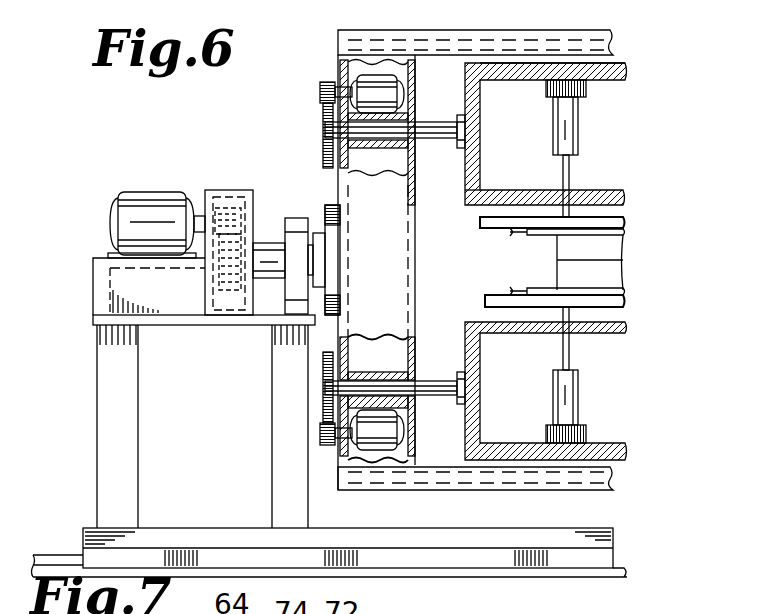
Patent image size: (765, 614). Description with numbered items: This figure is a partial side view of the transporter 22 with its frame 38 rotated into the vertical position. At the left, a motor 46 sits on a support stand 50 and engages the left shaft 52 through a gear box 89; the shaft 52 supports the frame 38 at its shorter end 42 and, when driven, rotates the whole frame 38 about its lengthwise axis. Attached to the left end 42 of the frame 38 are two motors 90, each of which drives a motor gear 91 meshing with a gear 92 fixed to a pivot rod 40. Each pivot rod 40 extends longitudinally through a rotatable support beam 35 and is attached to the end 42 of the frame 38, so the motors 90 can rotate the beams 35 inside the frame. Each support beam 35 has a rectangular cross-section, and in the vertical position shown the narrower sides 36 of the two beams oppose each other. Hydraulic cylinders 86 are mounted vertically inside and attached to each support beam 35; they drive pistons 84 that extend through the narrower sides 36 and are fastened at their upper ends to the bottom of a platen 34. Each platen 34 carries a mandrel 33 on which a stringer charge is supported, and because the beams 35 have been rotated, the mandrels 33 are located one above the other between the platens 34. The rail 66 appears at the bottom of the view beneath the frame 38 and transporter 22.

The transporter 22 is at (597, 478).
The mandrel 33 is at (612, 248).
The platen 34 is at (625, 222).
The support beam 35 is at (520, 63).
The narrower sides 36 is at (623, 200).
The frame 38 is at (493, 493).
The pivot rod 40 is at (435, 125).
The shorter end 42 is at (345, 52).
The motor 46 is at (160, 192).
The support stand 50 is at (112, 422).
The shaft 52 is at (265, 243).
The rail 66 is at (330, 584).
The piston 84 is at (573, 173).
The hydraulic cylinder 86 is at (573, 122).
The gear box 89 is at (233, 190).
The motor 90 is at (383, 80).
The motor gear 91 is at (325, 82).
The gear 92 is at (323, 135).